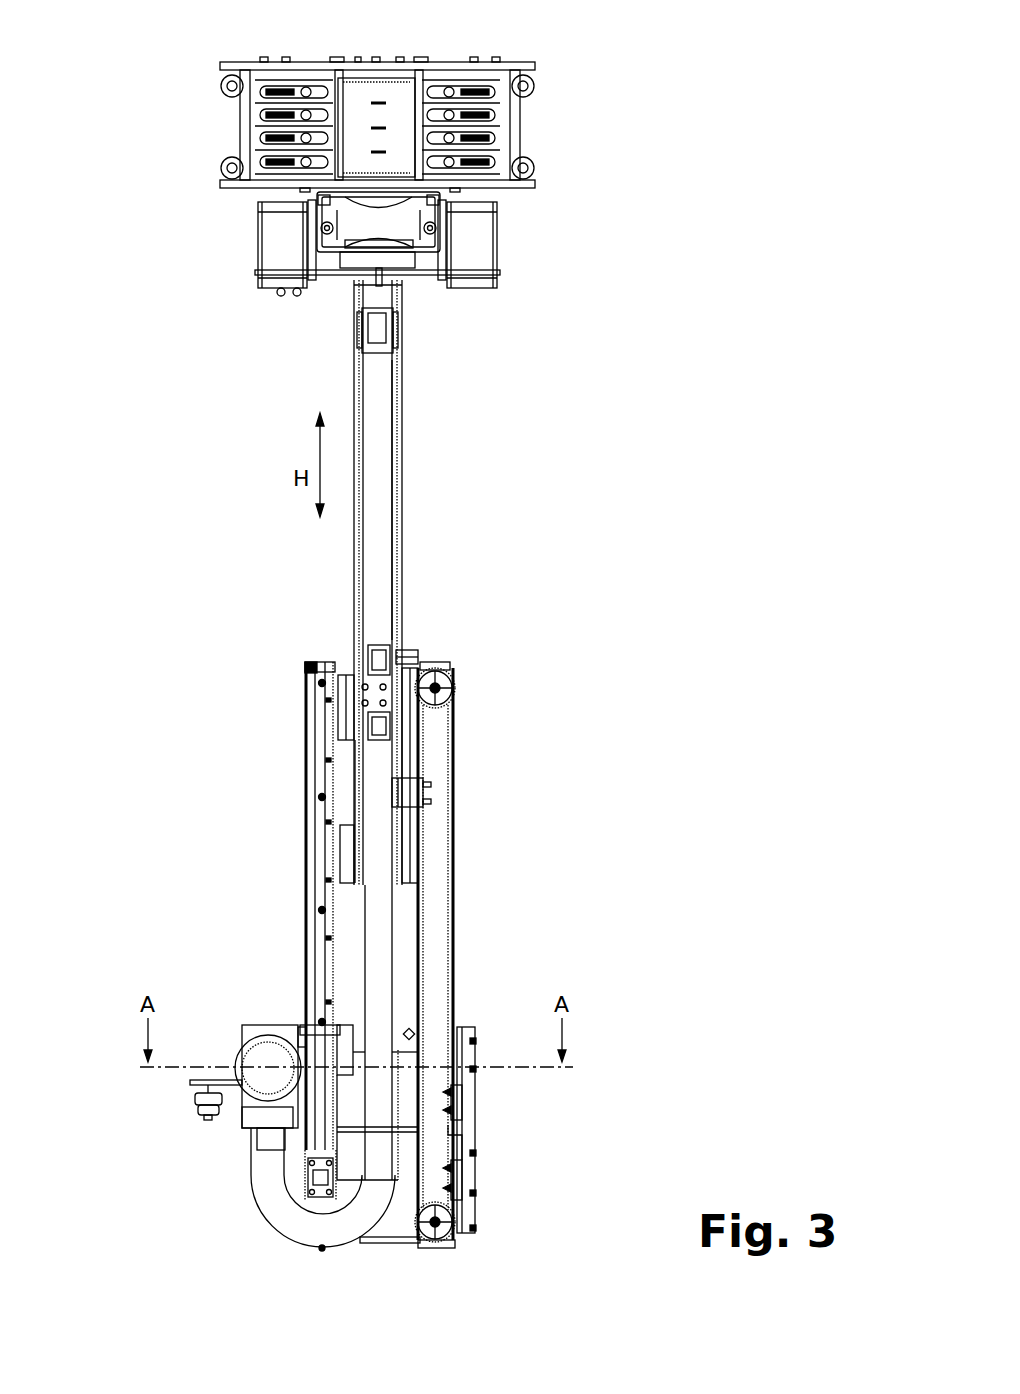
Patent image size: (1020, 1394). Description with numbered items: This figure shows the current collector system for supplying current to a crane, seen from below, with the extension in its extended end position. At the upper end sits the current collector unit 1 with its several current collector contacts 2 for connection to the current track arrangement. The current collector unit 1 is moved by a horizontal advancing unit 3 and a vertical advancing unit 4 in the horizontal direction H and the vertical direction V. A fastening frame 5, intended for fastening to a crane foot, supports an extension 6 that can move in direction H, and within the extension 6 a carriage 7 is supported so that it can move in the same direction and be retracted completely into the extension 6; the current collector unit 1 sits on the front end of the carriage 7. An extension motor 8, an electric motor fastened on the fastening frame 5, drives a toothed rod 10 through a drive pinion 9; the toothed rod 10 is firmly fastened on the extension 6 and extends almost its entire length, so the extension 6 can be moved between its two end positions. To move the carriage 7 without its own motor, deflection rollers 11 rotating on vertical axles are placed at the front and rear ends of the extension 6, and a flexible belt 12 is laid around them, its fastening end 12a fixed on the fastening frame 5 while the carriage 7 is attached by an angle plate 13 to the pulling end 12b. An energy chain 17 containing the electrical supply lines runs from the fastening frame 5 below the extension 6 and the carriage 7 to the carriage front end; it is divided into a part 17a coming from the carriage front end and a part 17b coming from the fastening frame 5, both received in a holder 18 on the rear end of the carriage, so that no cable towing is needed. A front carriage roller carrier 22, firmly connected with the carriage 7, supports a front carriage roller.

The current collector unit 1 is at (405, 97).
The current collector contacts 2 is at (283, 92).
The horizontal advancing unit 3 is at (520, 540).
The vertical advancing unit 4 is at (572, 226).
The fastening frame 5 is at (472, 1098).
The extension 6 is at (277, 906).
The carriage 7 is at (356, 560).
The extension motor 8 is at (255, 1052).
The drive pinion 9 is at (305, 1030).
The toothed rod 10 is at (312, 932).
The deflection rollers 11 is at (455, 680).
The belt 12 is at (485, 951).
The fastening end 12a is at (455, 923).
The pulling end 12b is at (422, 973).
The angle plate 13 is at (423, 795).
The energy chain 17 is at (343, 765).
The part of the energy chain 17a is at (388, 400).
The part of the energy chain 17b is at (262, 1213).
The holder 18 is at (400, 656).
The front carriage roller carrier 22 is at (340, 703).